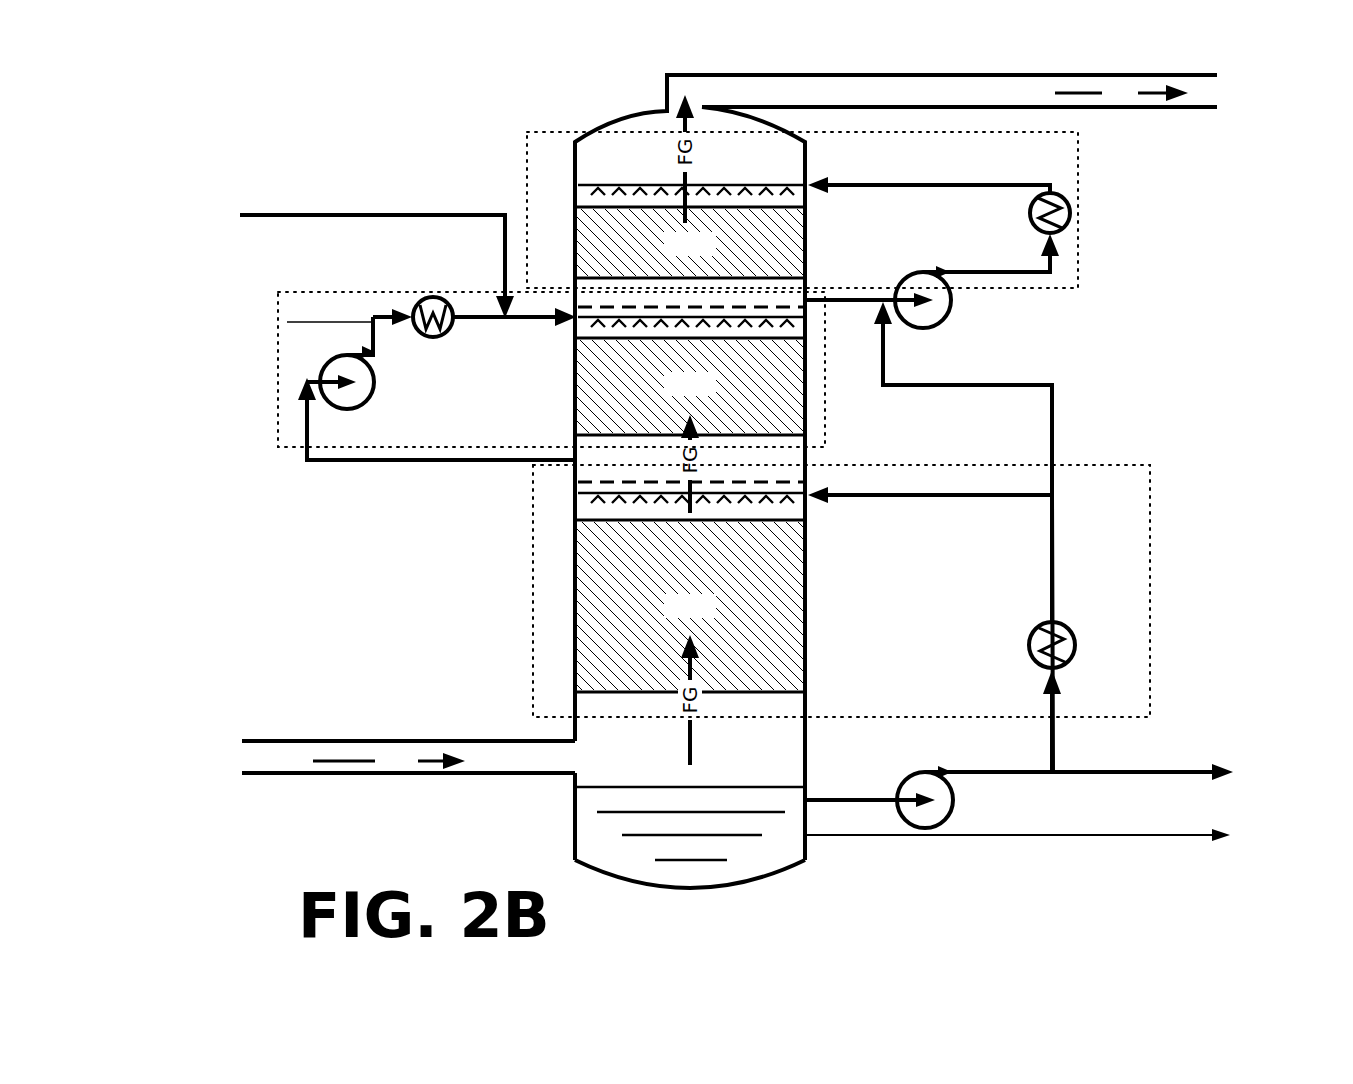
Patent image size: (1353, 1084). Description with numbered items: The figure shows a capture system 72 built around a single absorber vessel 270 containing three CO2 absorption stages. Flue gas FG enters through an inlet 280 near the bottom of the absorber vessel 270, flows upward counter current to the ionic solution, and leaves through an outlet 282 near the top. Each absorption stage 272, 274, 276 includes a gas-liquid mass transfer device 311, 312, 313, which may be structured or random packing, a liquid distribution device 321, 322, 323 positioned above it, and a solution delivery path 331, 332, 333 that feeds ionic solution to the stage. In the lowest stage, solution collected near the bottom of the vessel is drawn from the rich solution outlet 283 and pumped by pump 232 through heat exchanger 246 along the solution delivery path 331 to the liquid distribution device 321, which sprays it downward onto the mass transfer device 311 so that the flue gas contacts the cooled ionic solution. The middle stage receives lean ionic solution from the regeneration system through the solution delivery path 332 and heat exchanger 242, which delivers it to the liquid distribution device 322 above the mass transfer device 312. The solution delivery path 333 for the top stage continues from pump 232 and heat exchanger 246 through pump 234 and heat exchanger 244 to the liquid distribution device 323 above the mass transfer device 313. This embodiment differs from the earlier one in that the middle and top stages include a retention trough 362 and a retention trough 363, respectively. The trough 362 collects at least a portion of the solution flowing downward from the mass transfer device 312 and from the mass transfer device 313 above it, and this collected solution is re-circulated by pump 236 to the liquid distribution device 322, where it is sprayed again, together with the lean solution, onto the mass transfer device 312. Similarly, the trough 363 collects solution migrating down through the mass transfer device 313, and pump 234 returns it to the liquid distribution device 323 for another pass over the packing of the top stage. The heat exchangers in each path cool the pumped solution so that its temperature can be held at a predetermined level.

The capture system 72 is at (280, 598).
The pump 232 is at (945, 800).
The pump 234 is at (955, 320).
The pump 236 is at (372, 395).
The heat exchanger 242 is at (437, 335).
The heat exchanger 244 is at (1035, 215).
The heat exchanger 246 is at (1037, 647).
The absorber vessel 270 is at (575, 165).
The absorption stage 272 is at (1108, 470).
The absorption stage 274 is at (282, 348).
The absorption stage 276 is at (1078, 173).
The inlet 280 is at (492, 765).
The outlet 282 is at (1205, 100).
The rich solution outlet 283 is at (815, 795).
The mass transfer device 311 is at (800, 637).
The mass transfer device 312 is at (800, 368).
The mass transfer device 313 is at (795, 262).
The liquid distribution device 321 is at (595, 508).
The liquid distribution device 322 is at (575, 322).
The liquid distribution device 323 is at (762, 180).
The solution delivery path 331 is at (926, 651).
The solution delivery path 332 is at (370, 206).
The solution delivery path 333 is at (1062, 366).
The retention trough 362 is at (775, 480).
The retention trough 363 is at (775, 303).